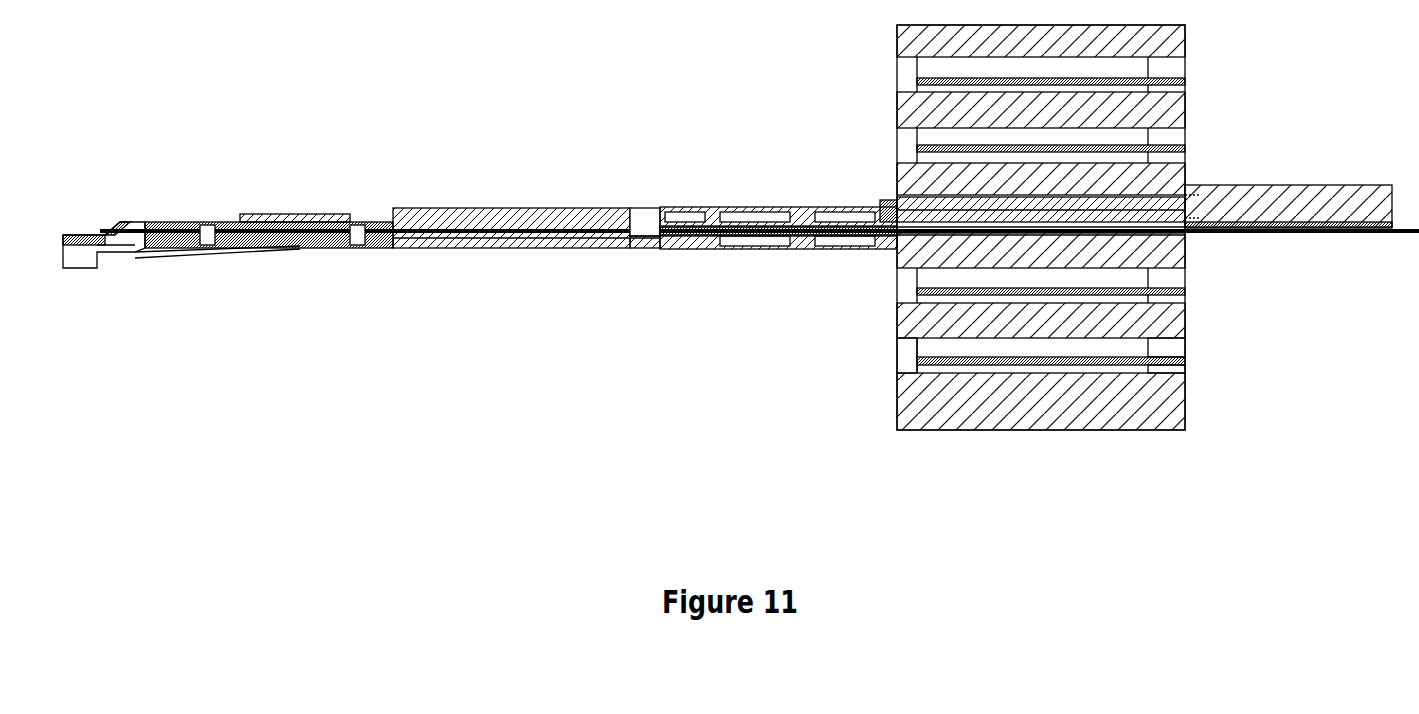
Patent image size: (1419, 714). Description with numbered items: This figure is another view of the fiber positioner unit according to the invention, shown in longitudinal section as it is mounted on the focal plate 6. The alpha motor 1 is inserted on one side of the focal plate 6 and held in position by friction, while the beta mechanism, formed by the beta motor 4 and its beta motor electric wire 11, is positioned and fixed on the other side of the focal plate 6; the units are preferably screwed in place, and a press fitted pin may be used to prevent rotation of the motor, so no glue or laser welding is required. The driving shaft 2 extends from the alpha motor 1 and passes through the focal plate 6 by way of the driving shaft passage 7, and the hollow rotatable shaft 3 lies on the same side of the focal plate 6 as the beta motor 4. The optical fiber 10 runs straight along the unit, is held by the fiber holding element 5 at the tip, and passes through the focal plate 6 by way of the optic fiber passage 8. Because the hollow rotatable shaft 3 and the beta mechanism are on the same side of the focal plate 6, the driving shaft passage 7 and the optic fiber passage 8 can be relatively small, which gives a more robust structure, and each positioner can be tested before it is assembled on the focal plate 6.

The alpha motor 1 is at (1352, 217).
The driving shaft 2 is at (1088, 214).
The hollow rotatable shaft 3 is at (785, 225).
The beta motor 4 is at (540, 228).
The fiber holding element 5 is at (100, 228).
The focal plate 6 is at (1037, 434).
The driving shaft passage 7 is at (1187, 347).
The optic fiber passage 8 is at (915, 371).
The optical fiber 10 is at (1240, 234).
The beta motor electric wire 11 is at (1258, 225).